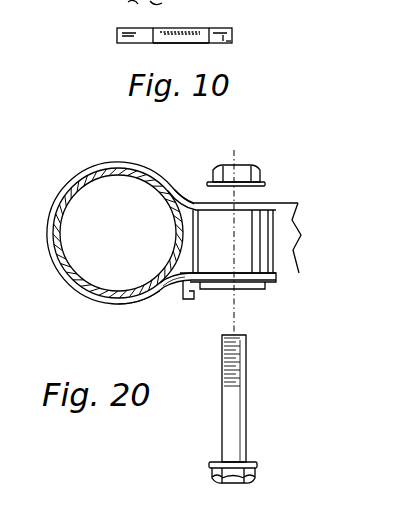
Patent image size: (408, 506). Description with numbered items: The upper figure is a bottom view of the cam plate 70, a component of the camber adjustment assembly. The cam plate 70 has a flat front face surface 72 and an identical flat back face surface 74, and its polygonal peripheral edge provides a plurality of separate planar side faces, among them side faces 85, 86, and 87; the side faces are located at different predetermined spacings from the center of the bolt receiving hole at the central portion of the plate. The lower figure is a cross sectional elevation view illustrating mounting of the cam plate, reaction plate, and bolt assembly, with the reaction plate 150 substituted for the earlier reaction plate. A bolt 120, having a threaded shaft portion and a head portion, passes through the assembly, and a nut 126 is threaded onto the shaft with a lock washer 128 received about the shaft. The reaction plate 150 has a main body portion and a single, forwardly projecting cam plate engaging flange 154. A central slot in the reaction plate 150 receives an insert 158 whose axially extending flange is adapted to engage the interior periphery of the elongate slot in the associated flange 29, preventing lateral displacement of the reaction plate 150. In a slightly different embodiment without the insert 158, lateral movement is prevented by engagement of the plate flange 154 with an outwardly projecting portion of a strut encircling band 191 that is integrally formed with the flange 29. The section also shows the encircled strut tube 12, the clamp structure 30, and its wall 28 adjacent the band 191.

In FIG. 10, the cam plate 70 is at (224, 54).
In FIG. 10, the flat front face surface 72 is at (175, 30).
In FIG. 10, the flat back face surface 74 is at (165, 43).
In FIG. 10, the planar side face 85 is at (132, 32).
In FIG. 10, the planar side face 86 is at (190, 41).
In FIG. 10, the planar side face 87 is at (226, 46).
In FIG. 20, the tubular member 12 is at (130, 233).
In FIG. 20, the clamp band wall 28 is at (200, 202).
In FIG. 20, the flange 29 is at (187, 292).
In FIG. 20, the clamp 30 is at (310, 229).
In FIG. 20, the bolt 120 is at (235, 420).
In FIG. 20, the nut 126 is at (256, 167).
In FIG. 20, the lock washer 128 is at (265, 183).
In FIG. 20, the reaction plate 150 is at (273, 287).
In FIG. 20, the cam plate engaging flange 154 is at (188, 301).
In FIG. 20, the insert 158 is at (250, 290).
In FIG. 20, the strut encircling band 191 is at (130, 303).